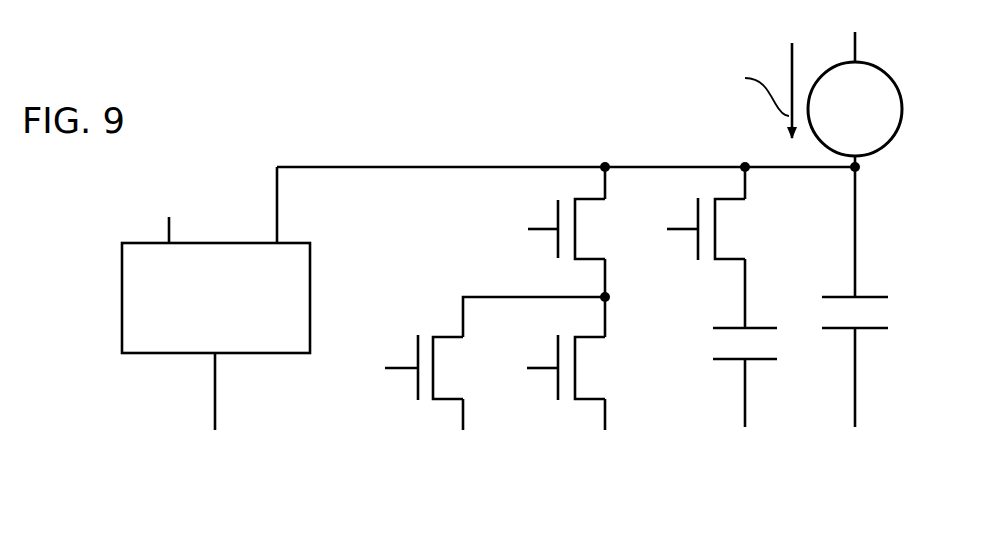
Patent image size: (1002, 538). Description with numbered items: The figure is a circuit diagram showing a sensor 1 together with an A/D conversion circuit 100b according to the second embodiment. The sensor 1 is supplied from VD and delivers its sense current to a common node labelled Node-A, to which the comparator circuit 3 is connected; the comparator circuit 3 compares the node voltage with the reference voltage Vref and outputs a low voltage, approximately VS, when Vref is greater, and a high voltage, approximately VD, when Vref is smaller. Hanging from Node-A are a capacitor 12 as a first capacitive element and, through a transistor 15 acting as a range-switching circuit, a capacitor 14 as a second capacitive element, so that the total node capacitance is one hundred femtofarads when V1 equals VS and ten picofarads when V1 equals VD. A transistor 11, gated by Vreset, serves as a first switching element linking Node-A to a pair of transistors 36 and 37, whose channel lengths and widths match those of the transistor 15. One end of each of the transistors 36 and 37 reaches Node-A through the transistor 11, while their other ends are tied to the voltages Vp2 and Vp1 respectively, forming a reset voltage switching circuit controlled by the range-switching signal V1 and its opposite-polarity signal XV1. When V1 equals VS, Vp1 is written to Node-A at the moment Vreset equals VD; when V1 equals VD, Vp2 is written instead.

The A/D conversion circuit 100b is at (421, 119).
The sensor 1 is at (901, 93).
The comparator circuit 3 is at (268, 353).
The transistor 11 is at (594, 231).
The capacitor 12 is at (890, 313).
The capacitor 14 is at (775, 345).
The transistor 15 is at (740, 234).
The transistor 36 is at (452, 370).
The transistor 37 is at (594, 369).